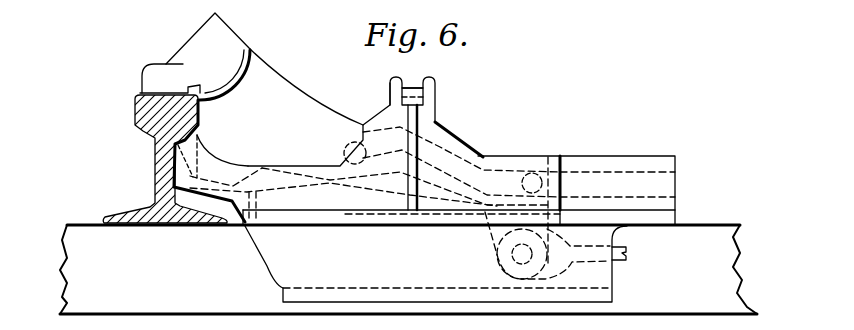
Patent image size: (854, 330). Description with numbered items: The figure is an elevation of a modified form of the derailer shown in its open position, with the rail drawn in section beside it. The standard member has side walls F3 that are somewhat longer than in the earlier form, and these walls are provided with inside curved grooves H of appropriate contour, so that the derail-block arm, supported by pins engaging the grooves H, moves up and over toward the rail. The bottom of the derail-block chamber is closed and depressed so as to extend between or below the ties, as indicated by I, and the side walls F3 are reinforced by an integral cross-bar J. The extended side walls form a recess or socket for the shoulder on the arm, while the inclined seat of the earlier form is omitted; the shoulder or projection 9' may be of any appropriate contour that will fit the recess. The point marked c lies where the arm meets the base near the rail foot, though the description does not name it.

The shoulder or projection 9' is at (251, 117).
The integral cross-bar J is at (422, 80).
The inside curved grooves H is at (507, 167).
The side walls F3 is at (684, 189).
The depressed closed bottom of derail-block chamber I is at (408, 269).
The point of contact c is at (242, 232).